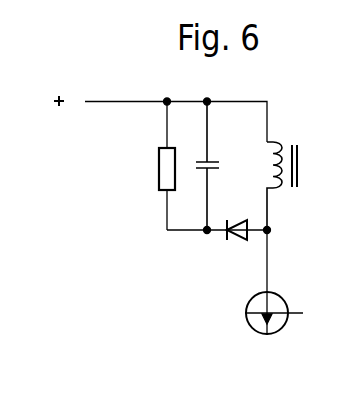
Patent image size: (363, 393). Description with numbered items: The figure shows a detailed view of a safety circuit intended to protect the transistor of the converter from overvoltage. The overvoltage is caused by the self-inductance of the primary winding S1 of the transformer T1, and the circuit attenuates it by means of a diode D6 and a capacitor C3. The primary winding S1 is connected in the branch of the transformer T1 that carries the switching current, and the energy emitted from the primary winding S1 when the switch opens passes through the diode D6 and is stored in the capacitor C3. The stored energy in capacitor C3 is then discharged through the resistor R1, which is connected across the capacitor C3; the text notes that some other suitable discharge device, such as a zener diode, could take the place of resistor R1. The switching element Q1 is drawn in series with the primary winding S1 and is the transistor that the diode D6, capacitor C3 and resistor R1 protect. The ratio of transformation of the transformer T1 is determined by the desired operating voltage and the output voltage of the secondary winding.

The resistor R1 is at (154, 166).
The capacitor C3 is at (214, 166).
The primary winding S1 is at (262, 186).
The transformer T1 is at (287, 152).
The diode D6 is at (237, 244).
The transistor / switching element Q1 is at (274, 282).